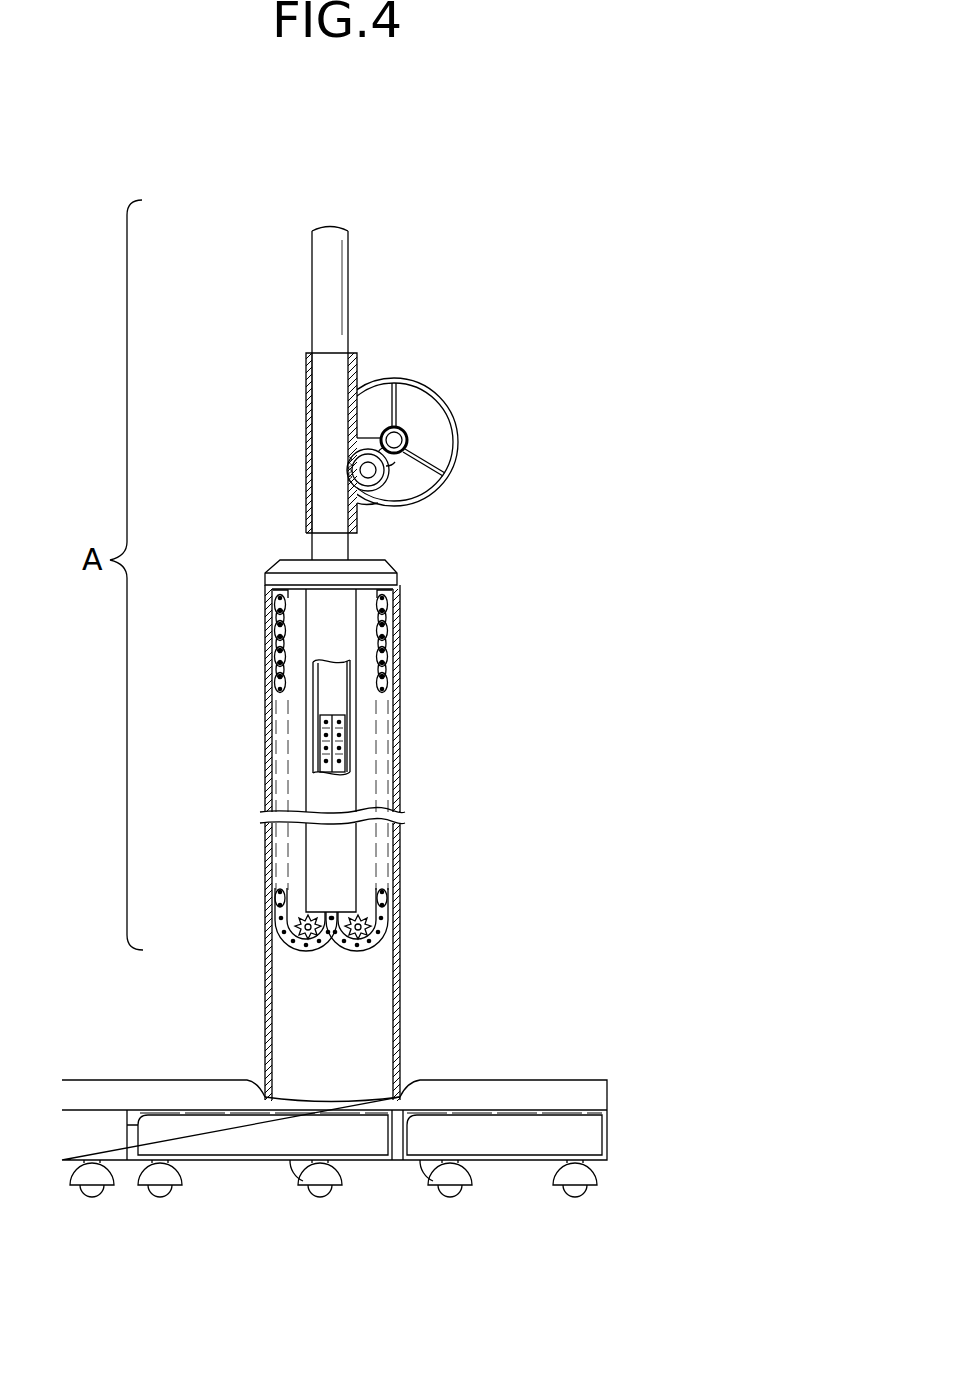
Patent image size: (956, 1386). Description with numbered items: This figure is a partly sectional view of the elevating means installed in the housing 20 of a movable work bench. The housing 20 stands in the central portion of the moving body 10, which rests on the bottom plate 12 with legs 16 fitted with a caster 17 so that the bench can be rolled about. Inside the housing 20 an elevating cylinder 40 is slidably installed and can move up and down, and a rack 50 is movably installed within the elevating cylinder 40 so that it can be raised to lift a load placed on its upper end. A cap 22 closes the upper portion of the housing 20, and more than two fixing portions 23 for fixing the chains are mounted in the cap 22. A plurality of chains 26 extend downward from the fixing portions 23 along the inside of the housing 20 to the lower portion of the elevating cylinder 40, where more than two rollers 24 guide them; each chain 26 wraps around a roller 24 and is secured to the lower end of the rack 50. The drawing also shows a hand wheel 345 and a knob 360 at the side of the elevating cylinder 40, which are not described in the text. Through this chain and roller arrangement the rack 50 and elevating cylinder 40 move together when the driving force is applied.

The moving body 10 is at (410, 1118).
The bottom plate 12 is at (486, 1090).
The legs 16 is at (498, 1140).
The caster 17 is at (578, 1172).
The housing 20 is at (400, 890).
The cap 22 is at (380, 562).
The fixing portion 23 is at (393, 594).
The roller 24 is at (292, 918).
The chain 26 is at (280, 652).
The elevating cylinder 40 is at (306, 455).
The rack 50 is at (325, 270).
The hand wheel 345 is at (430, 388).
The locking knob 360 is at (378, 503).